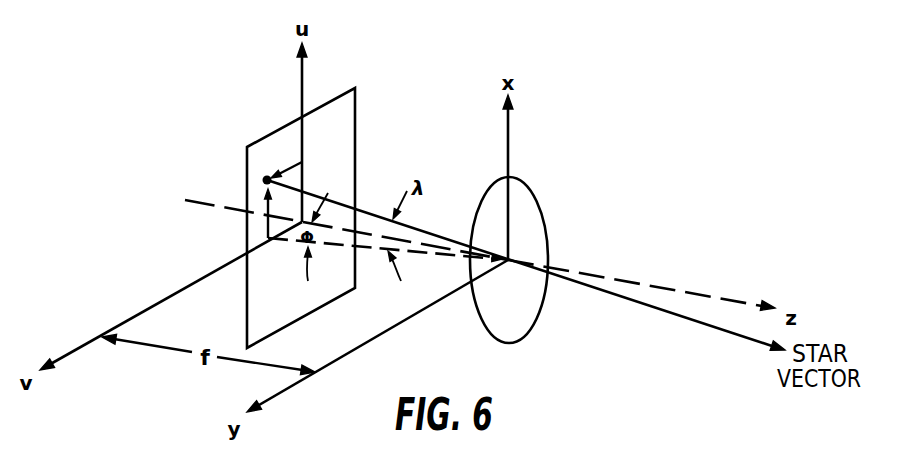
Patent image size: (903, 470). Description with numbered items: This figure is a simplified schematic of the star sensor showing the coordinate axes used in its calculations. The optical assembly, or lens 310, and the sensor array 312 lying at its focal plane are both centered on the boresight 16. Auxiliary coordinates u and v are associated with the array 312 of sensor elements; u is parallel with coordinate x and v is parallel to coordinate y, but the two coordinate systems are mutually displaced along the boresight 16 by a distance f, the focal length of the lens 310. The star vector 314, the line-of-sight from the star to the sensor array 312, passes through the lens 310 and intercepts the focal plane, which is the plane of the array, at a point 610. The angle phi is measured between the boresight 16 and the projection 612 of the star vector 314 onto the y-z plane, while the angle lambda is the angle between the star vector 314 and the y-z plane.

The boresight 16 is at (221, 204).
The optical assembly 310 is at (542, 213).
The sensor array 312 is at (356, 92).
The star vector 314 is at (420, 228).
The point 610 is at (266, 177).
The projection 612 is at (432, 256).